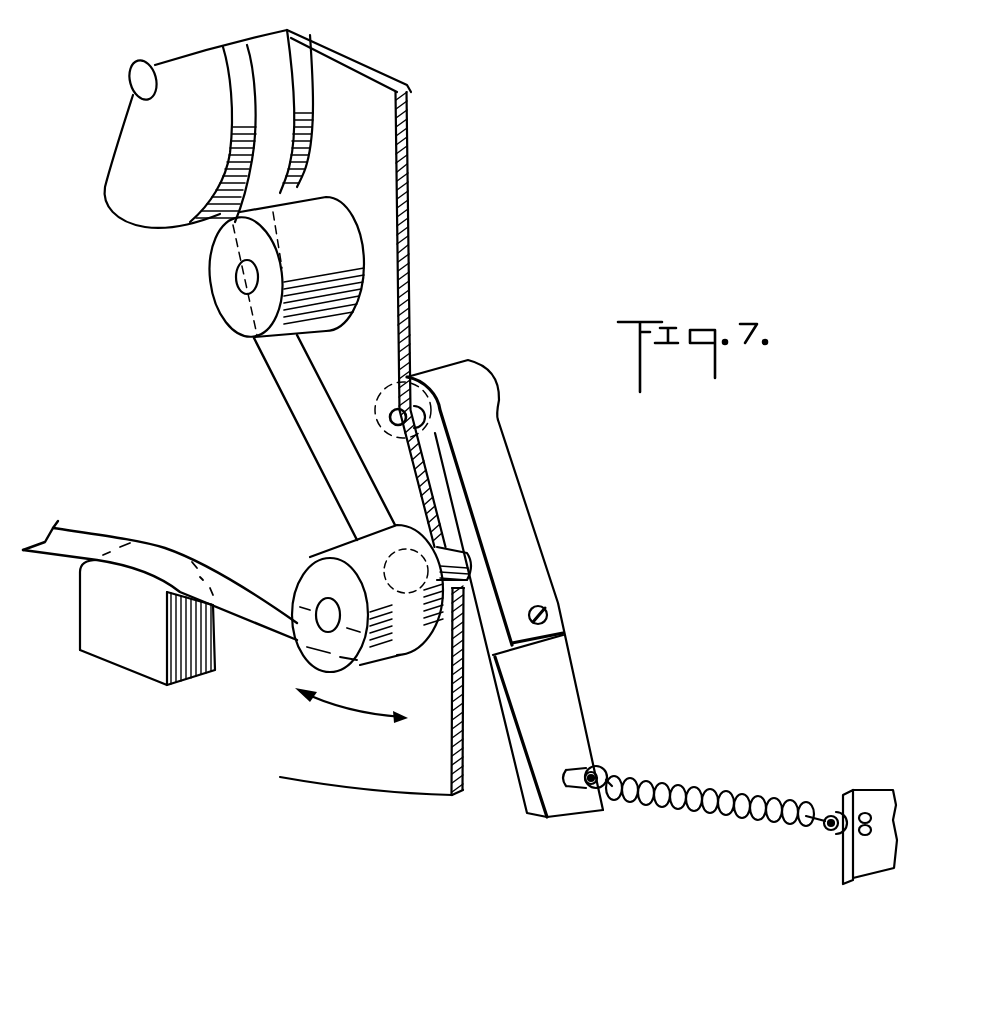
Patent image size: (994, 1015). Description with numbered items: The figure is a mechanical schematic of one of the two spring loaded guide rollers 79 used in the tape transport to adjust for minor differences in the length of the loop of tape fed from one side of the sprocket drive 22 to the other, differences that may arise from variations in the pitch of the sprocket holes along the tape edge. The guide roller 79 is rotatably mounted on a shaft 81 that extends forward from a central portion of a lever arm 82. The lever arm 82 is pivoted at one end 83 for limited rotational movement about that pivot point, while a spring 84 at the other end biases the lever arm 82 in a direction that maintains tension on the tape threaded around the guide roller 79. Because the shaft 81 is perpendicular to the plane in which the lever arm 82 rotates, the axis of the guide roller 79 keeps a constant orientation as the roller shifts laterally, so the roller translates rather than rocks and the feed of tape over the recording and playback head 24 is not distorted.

The sprocket drive 22 is at (147, 217).
The first recording and playback head 24 is at (147, 670).
The spring loaded guide roller 79 is at (310, 557).
The shaft 81 is at (457, 558).
The lever arm 82 is at (562, 690).
The pivot end 83 is at (417, 417).
The spring 84 is at (707, 787).